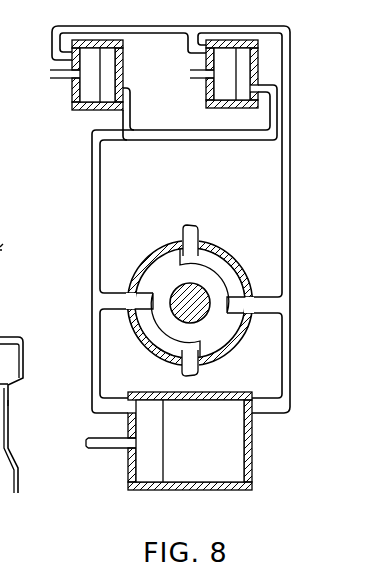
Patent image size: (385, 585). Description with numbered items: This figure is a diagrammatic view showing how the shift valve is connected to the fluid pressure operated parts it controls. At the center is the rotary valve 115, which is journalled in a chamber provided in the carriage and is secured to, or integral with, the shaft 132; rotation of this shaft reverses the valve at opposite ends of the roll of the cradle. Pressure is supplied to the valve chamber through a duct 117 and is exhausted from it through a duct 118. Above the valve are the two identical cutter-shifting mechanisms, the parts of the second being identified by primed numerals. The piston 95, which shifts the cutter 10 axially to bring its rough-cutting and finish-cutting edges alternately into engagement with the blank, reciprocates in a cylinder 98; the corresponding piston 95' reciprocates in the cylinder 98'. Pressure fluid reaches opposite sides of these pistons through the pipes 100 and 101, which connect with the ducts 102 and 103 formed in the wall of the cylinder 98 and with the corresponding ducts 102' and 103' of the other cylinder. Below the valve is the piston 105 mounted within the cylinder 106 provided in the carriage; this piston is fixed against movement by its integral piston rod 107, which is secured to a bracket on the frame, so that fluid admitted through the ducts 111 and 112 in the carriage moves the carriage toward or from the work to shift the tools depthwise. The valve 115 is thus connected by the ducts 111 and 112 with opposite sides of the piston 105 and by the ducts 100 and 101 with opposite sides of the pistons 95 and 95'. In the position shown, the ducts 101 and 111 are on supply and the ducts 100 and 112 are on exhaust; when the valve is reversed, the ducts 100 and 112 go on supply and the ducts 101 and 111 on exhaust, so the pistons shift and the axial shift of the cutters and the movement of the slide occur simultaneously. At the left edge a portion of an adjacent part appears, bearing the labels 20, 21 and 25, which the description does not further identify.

The cutter 10 is at (0, 306).
The component portion 20 is at (2, 262).
The component portion 21 is at (5, 403).
The component portion 25 is at (0, 248).
The piston 95 is at (220, 87).
The piston 95' is at (100, 70).
The cylinder 98 is at (223, 83).
The cylinder 98' is at (91, 84).
The pipe 100 is at (94, 222).
The pipe 101 is at (289, 220).
The duct 102 is at (191, 105).
The duct 102' is at (146, 114).
The duct 103 is at (171, 53).
The duct 103' is at (147, 39).
The piston 105 is at (150, 473).
The cylinder 106 is at (250, 487).
The piston rod 107 is at (108, 448).
The duct 111 is at (272, 408).
The duct 112 is at (97, 403).
The rotary valve 115 is at (160, 278).
The duct 117 is at (192, 234).
The duct 118 is at (181, 364).
The shaft 132 is at (198, 297).